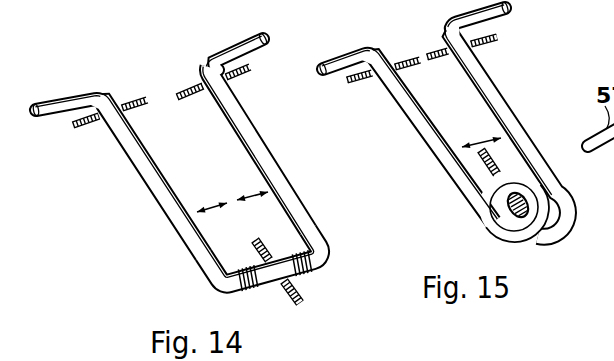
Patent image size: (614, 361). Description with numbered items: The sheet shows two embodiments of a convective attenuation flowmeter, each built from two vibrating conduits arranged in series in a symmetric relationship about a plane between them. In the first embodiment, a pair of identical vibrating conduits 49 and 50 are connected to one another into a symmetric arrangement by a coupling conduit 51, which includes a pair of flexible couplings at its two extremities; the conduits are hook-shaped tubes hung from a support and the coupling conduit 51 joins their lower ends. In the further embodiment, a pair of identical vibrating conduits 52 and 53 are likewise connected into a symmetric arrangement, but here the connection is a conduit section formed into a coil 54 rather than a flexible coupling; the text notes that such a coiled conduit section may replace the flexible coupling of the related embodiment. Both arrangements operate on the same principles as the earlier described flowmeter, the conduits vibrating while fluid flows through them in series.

In FIG. 14, the vibrating conduit 49 is at (275, 146).
In FIG. 14, the vibrating conduit 50 is at (152, 192).
In FIG. 14, the coupling conduit 51 is at (271, 285).
In FIG. 15, the vibrating conduit 52 is at (504, 110).
In FIG. 15, the vibrating conduit 53 is at (425, 150).
In FIG. 15, the coil 54 is at (541, 213).